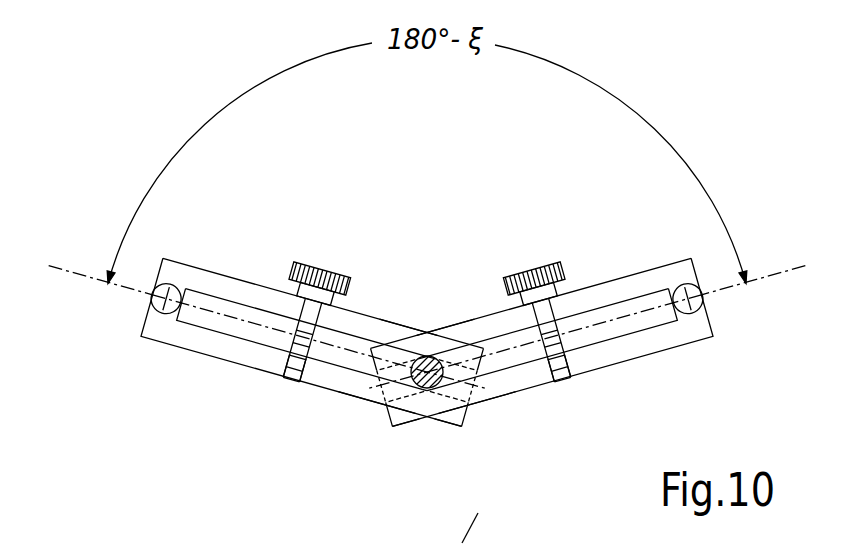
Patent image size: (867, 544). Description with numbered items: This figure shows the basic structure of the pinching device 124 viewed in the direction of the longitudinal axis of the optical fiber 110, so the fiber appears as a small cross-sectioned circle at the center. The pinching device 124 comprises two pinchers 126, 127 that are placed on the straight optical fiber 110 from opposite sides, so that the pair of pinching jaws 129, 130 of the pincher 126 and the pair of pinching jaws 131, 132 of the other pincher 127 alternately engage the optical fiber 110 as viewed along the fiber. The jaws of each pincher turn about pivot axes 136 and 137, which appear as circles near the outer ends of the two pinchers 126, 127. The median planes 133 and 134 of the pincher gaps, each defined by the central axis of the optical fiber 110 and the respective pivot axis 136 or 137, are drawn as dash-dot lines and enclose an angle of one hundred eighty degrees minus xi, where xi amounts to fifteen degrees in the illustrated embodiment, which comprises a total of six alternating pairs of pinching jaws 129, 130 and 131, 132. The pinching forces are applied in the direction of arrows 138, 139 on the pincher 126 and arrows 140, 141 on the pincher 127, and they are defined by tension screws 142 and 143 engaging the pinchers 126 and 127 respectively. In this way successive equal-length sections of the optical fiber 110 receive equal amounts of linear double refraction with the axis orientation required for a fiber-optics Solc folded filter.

The optical fiber 110 is at (419, 388).
The pinching device 124 is at (448, 433).
The pincher 126 is at (183, 347).
The pincher 127 is at (671, 347).
The pinching jaw 129 is at (368, 322).
The pinching jaw 130 is at (352, 380).
The pinching jaw 131 is at (486, 322).
The pinching jaw 132 is at (528, 375).
The median plane of the pincher gap 133 is at (69, 274).
The median plane of the pincher gap 134 is at (785, 274).
The pivot axis 136 is at (157, 285).
The pivot axis 137 is at (697, 285).
The arrow indicating pinching force direction 138 is at (327, 258).
The arrow indicating pinching force direction 139 is at (290, 385).
The arrow indicating pinching force direction 140 is at (527, 258).
The arrow indicating pinching force direction 141 is at (564, 385).
The tension screw 142 is at (299, 262).
The tension screw 143 is at (555, 262).